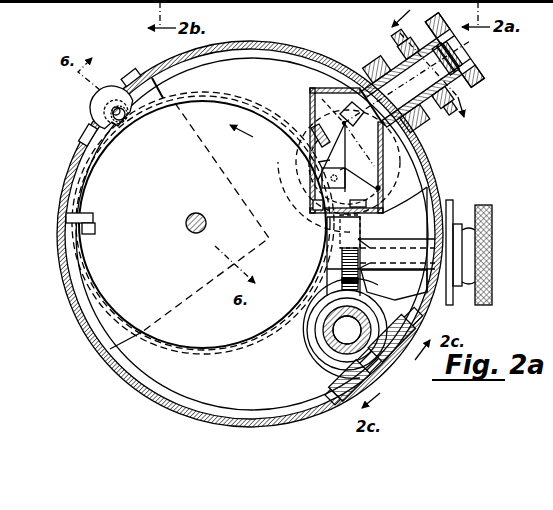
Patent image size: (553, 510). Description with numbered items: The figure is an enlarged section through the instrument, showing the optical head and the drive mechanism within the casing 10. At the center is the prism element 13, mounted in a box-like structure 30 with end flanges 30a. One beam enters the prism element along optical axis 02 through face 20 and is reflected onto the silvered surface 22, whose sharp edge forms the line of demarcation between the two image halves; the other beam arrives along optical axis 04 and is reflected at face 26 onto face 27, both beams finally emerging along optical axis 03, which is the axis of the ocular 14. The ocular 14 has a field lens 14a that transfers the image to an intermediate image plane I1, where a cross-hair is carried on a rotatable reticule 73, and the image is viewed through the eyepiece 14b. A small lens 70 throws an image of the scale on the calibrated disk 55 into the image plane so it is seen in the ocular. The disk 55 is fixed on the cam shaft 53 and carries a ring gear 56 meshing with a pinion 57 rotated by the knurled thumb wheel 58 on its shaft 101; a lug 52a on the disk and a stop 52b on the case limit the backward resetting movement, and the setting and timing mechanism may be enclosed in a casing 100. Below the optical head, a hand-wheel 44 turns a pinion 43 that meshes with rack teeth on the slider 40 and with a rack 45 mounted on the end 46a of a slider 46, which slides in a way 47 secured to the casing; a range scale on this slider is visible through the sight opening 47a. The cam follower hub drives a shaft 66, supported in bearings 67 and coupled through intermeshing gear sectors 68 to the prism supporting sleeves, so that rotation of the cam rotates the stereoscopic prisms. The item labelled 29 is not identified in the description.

The casing 10 is at (70, 157).
The calibrated disk 55 is at (293, 122).
The ring gear 56 is at (265, 114).
The knurled thumb wheel 58 is at (90, 107).
The pinion 57 is at (127, 121).
The shaft 101 is at (120, 122).
The casing 100 is at (166, 97).
The stop 52b is at (93, 217).
The lug 52a is at (95, 229).
The cam shaft 53 is at (188, 220).
The box-like structure 30 is at (310, 92).
The small lens 70 is at (313, 137).
The light path 29 is at (337, 108).
The silvered surface 22 is at (355, 118).
The prism element 13 is at (373, 170).
The face 20 is at (348, 159).
The face 27 is at (318, 162).
The face 26 is at (340, 170).
The optical axis 04 is at (345, 172).
The optical axis 02 is at (379, 191).
The end flanges 30a is at (427, 193).
The rack 45 is at (362, 231).
The slider 40 is at (330, 283).
The pinion 43 is at (342, 262).
The gear sectors 68 is at (388, 276).
The shaft 66 is at (327, 330).
The bearings 67 is at (323, 341).
The end of slider 46a is at (330, 352).
The slider 46 is at (340, 388).
The way 47 is at (345, 397).
The sight opening 47a is at (387, 374).
The hand-wheel 44 is at (485, 205).
The ocular 14 is at (497, 81).
The field lens 14a is at (430, 73).
The eyepiece 14b is at (462, 58).
The optical axis 03 is at (470, 38).
The rotatable reticule 73 is at (471, 97).
The intermediate image plane I1 is at (428, 64).